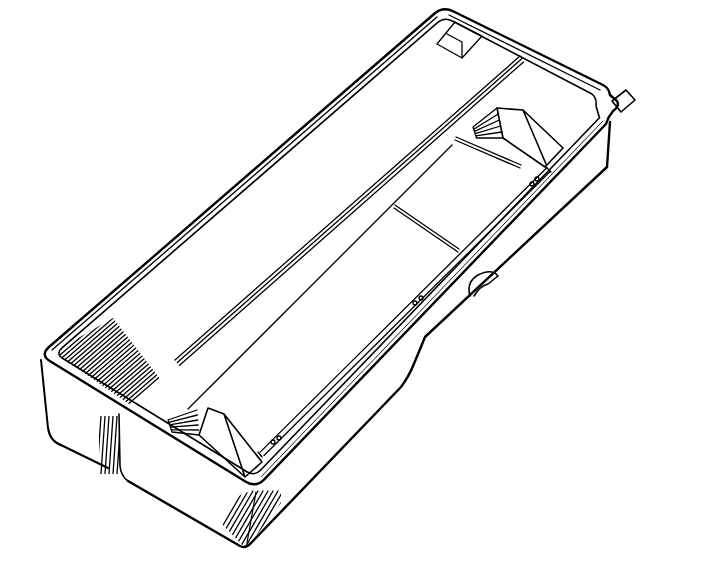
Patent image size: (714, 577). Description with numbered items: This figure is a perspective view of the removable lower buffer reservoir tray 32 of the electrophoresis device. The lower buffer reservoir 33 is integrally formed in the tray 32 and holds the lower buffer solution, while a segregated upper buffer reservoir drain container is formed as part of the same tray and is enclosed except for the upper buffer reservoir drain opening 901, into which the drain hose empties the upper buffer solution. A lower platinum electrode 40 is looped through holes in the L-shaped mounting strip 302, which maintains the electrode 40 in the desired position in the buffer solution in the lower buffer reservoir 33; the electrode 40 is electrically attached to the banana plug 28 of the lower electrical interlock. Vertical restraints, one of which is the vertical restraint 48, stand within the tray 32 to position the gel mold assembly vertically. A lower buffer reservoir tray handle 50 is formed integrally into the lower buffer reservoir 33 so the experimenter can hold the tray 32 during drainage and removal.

The upper buffer reservoir drain opening 901 is at (440, 13).
The banana plug 28 is at (626, 92).
The vertical restraint 48 is at (312, 313).
The lower buffer reservoir 33 is at (399, 274).
The L-shaped mounting strip 302 is at (318, 400).
The lower platinum electrode 40 is at (297, 428).
The lower buffer reservoir tray handle 50 is at (473, 296).
The lower buffer reservoir tray 32 is at (125, 478).